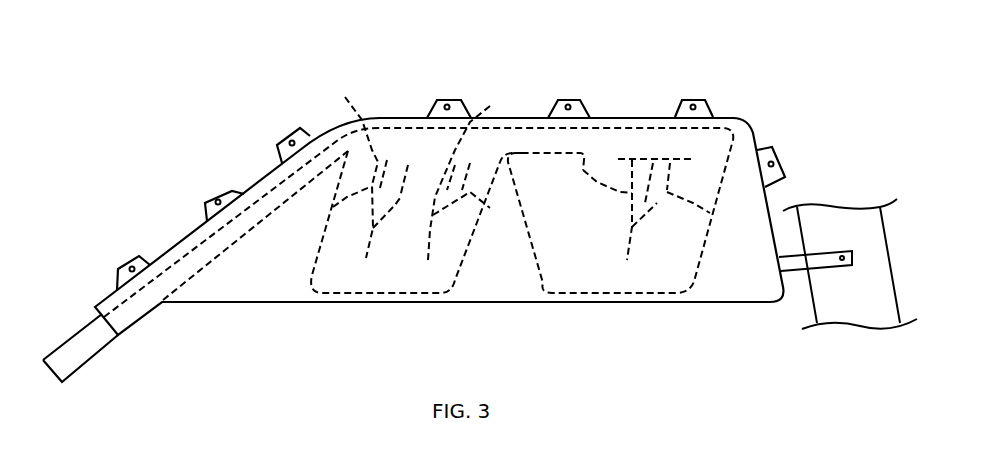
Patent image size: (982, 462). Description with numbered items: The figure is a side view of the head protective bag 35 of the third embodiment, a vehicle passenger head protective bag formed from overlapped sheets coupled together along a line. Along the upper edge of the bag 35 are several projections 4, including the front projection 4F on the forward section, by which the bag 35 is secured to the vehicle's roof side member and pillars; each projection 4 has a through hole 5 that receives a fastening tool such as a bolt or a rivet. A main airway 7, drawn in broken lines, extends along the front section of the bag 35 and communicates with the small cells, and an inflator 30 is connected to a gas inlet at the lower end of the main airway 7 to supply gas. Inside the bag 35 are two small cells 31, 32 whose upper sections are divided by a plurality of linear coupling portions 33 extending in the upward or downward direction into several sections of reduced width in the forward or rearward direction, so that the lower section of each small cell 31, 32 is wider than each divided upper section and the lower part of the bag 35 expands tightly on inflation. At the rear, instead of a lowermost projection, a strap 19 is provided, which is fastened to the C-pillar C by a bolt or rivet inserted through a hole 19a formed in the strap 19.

The projection 4 is at (463, 166).
The front mounting tab 4F is at (145, 256).
The through hole 5 is at (130, 268).
The main airway 7 is at (184, 255).
The strap 19 is at (823, 272).
The hole 19a is at (842, 255).
The inflator 30 is at (67, 362).
The small cell 31 is at (378, 290).
The small cell 32 is at (622, 287).
The linear coupling portion 33 is at (350, 101).
The bag 35 is at (630, 100).
The pillar C is at (880, 315).